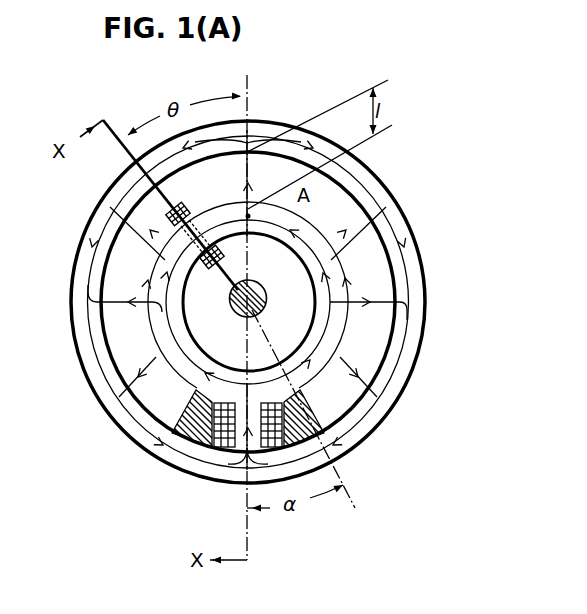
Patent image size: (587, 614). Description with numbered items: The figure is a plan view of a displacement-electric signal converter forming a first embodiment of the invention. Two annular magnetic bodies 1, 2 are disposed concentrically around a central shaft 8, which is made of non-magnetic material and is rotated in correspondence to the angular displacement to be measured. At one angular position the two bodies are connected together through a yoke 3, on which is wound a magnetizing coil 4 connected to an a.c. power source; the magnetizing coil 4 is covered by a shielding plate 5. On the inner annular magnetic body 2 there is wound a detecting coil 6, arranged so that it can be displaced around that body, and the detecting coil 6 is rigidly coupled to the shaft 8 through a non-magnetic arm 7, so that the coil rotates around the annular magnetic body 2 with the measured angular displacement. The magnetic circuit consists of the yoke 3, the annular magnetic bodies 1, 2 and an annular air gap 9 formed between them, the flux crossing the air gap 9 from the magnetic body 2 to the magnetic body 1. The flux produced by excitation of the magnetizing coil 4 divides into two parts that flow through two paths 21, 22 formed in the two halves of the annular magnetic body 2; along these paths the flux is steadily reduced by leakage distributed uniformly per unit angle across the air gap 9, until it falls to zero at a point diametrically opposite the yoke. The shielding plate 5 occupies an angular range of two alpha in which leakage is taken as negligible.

The annular magnetic body 1 is at (425, 234).
The annular magnetic body 2 is at (350, 327).
The yoke 3 is at (238, 440).
The magnetizing coil 4 is at (208, 446).
The shielding plate 5 is at (184, 408).
The detecting coil 6 is at (190, 206).
The arm 7 is at (220, 278).
The central shaft 8 is at (264, 292).
The annular air gap 9 is at (342, 212).
The path 21 is at (195, 348).
The path 22 is at (316, 323).